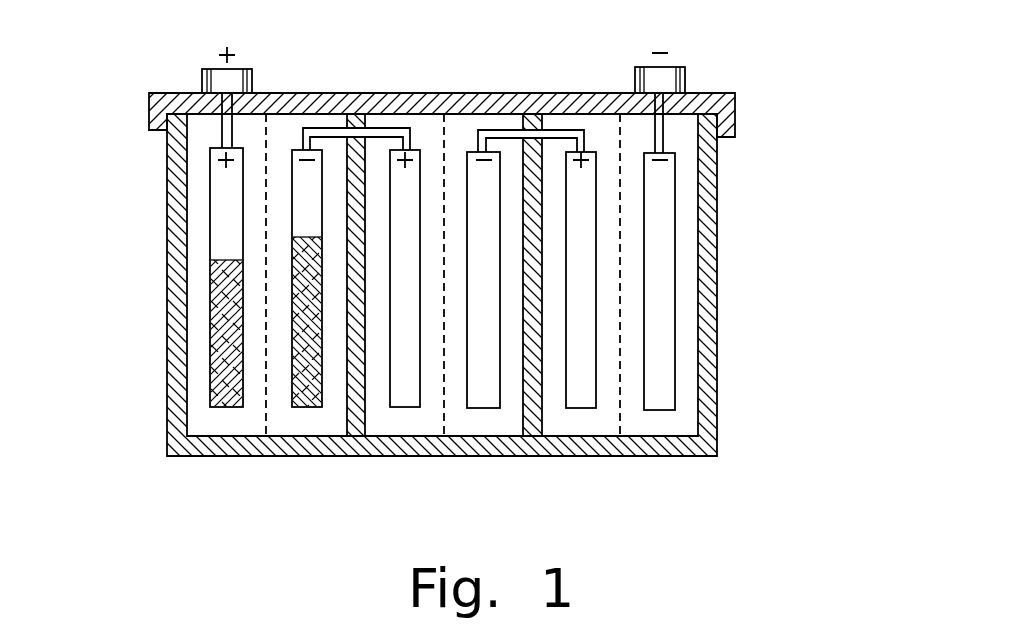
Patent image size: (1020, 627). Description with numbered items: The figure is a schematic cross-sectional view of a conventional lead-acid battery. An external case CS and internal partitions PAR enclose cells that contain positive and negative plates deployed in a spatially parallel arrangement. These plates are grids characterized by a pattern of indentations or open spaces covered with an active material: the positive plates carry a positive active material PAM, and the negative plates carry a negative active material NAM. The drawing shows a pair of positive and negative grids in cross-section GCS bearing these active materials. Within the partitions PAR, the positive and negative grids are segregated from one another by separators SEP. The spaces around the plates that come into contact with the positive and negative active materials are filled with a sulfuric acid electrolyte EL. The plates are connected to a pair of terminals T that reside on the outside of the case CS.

The terminals T is at (253, 83).
The positive active material PAM is at (213, 303).
The grids in cross-section GCS is at (221, 405).
The negative active material NAM is at (290, 392).
The internal partitions PAR is at (347, 418).
The separators SEP is at (620, 293).
The external case CS is at (590, 456).
The sulfuric acid electrolyte EL is at (662, 455).